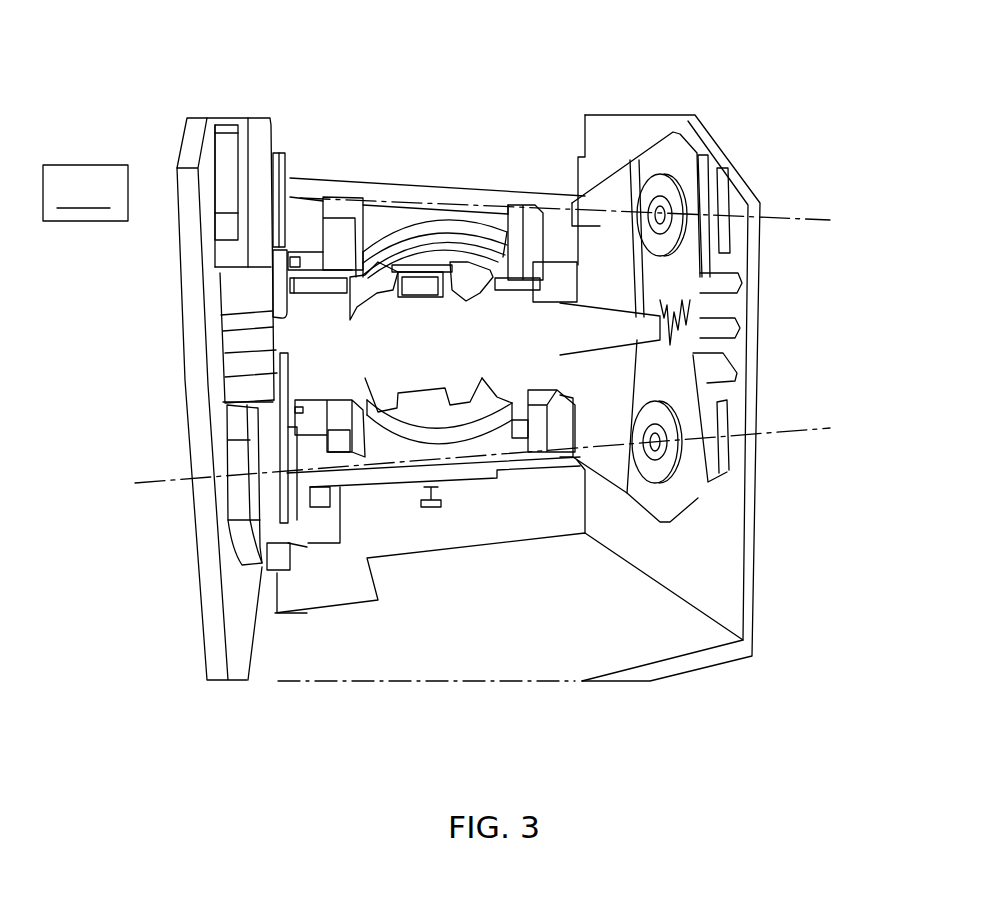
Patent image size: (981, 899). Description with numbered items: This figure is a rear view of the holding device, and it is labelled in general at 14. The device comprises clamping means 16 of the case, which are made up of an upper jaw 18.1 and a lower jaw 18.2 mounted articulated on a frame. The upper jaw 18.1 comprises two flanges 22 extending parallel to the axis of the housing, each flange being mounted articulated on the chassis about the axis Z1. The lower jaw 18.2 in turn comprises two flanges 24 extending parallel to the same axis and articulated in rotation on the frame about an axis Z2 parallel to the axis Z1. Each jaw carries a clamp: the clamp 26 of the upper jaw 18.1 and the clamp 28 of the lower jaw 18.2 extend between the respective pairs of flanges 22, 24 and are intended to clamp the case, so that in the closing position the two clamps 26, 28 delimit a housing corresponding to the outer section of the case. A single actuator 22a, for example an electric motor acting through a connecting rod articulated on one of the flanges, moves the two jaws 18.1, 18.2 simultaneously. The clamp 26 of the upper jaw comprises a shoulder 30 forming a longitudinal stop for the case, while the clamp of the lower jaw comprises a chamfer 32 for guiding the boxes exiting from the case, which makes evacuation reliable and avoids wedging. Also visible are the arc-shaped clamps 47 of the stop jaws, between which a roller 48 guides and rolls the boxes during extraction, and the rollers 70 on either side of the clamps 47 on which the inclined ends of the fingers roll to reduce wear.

The device / frame 14 is at (392, 116).
The clamping means 16 is at (447, 172).
The upper jaw 18.1 is at (512, 128).
The lower jaw 18.2 is at (408, 477).
The flange 22 is at (260, 130).
The actuator 22a is at (300, 198).
The flange 24 is at (273, 523).
The clamp 26 is at (473, 230).
The clamp 28 is at (460, 458).
The shoulder 30 is at (427, 246).
The chamfer 32 is at (418, 437).
The clamp 47 is at (367, 297).
The roller 48 is at (417, 297).
The roller 70 is at (318, 287).
The axis Z1 is at (806, 217).
The axis Z2 is at (808, 425).